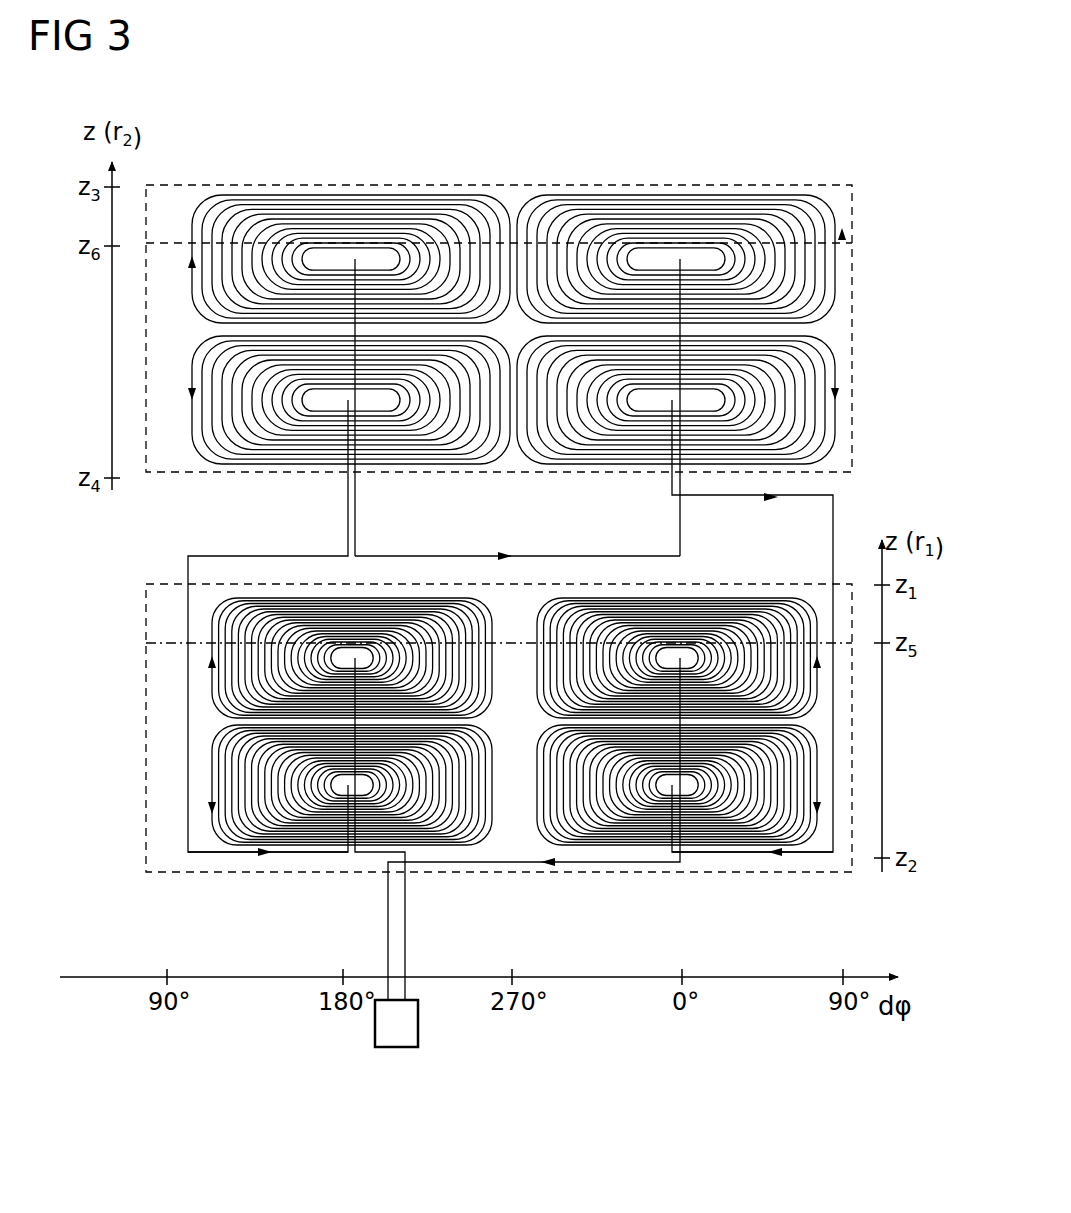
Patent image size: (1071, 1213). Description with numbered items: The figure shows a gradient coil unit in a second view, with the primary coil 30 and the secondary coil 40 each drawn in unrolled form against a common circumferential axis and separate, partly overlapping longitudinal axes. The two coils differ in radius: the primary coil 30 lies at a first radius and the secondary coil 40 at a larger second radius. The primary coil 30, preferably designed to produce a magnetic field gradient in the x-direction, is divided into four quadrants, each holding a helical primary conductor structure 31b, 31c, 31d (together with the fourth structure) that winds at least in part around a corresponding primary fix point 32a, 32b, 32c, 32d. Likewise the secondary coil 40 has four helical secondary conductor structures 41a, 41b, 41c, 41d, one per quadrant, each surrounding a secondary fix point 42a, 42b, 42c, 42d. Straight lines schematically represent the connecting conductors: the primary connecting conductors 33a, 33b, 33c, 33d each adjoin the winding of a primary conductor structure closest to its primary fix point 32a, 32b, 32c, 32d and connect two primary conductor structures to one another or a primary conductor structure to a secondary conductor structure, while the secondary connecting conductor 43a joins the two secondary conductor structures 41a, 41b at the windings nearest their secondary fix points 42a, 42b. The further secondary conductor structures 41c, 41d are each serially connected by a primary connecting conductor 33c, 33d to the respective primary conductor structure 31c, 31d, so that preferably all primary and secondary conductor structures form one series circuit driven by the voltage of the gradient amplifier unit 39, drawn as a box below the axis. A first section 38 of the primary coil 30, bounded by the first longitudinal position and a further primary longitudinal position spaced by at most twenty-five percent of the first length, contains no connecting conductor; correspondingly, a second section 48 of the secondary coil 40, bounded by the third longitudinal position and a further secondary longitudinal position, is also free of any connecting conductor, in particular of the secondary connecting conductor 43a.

The primary coil 30 is at (145, 843).
The helical primary conductor structure 31b is at (205, 658).
The helical primary conductor structure 31c is at (822, 594).
The helical primary conductor structure 31d is at (205, 815).
The primary fix point 32a is at (690, 651).
The primary fix point 32b is at (367, 651).
The primary fix point 32c is at (665, 793).
The primary fix point 32d is at (340, 793).
The primary connecting conductor 33a is at (568, 864).
The primary connecting conductor 33b is at (368, 856).
The primary connecting conductor 33c is at (805, 855).
The primary connecting conductor 33d is at (220, 856).
The first section 38 is at (160, 622).
The gradient amplifier unit 39 is at (397, 1046).
The secondary coil 40 is at (160, 478).
The helical secondary conductor structure 41a is at (832, 208).
The helical secondary conductor structure 41b is at (183, 258).
The helical secondary conductor structure 41c is at (842, 418).
The helical secondary conductor structure 41d is at (183, 413).
The secondary fix point 42a is at (690, 256).
The secondary fix point 42b is at (367, 256).
The secondary fix point 42c is at (660, 403).
The secondary fix point 42d is at (332, 403).
The secondary connecting conductor 43a is at (548, 548).
The second section 48 is at (180, 207).